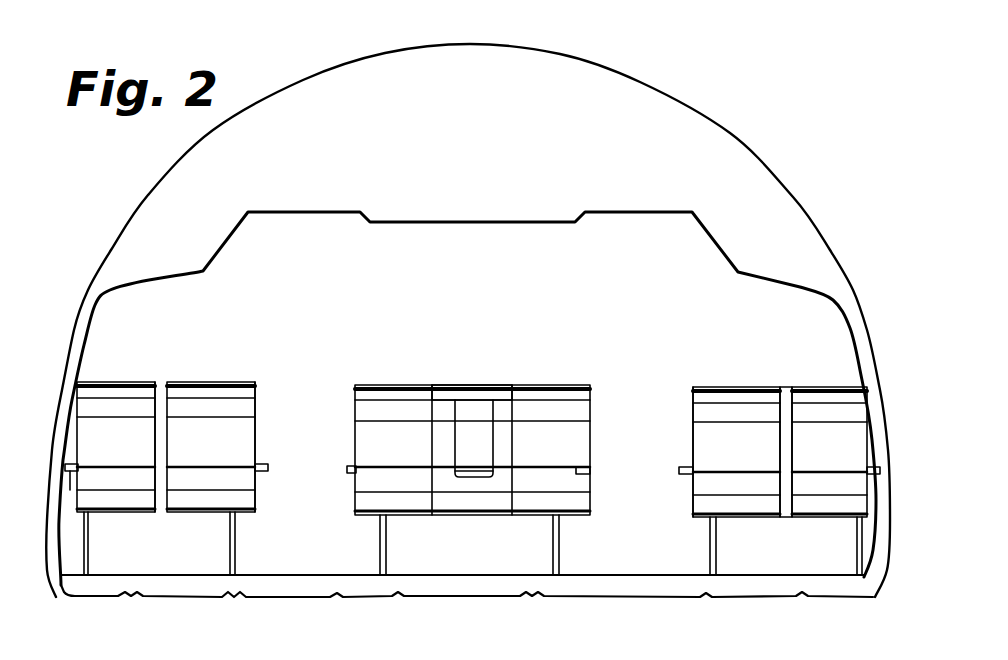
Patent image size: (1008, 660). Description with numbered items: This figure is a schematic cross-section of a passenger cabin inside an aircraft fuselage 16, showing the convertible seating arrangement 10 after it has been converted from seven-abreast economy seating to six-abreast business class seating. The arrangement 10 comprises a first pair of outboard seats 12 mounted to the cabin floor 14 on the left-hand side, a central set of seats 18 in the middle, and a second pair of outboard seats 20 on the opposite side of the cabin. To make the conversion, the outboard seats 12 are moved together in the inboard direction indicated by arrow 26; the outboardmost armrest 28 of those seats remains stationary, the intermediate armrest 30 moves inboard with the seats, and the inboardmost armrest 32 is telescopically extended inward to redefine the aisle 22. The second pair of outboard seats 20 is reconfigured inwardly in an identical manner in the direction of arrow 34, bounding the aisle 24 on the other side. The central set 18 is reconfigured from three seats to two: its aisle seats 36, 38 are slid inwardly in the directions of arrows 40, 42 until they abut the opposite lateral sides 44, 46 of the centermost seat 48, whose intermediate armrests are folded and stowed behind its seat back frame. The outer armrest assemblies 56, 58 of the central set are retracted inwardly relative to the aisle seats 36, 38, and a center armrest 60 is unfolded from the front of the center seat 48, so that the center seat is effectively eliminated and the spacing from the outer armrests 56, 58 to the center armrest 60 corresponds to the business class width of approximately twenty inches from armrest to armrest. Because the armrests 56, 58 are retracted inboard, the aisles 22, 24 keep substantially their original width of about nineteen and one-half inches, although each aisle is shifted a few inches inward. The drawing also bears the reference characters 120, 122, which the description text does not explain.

The convertible seating arrangement 10 is at (697, 323).
The first pair of outboard seats 12 is at (119, 377).
The floor 14 is at (310, 600).
The aircraft fuselage 16 is at (733, 133).
The central set of seats 18 is at (467, 372).
The second pair of outboard seats 20 is at (827, 373).
The aisle 22 is at (318, 438).
The aisle 24 is at (820, 352).
The arrow 26 is at (205, 352).
The outboardmost armrest 28 is at (73, 522).
The intermediate armrest 30 is at (160, 468).
The inboardmost armrest 32 is at (265, 463).
The arrow 34 is at (831, 250).
The aisle seat 36 is at (410, 384).
The aisle seat 38 is at (563, 388).
The arrow 40 is at (425, 352).
The arrow 42 is at (600, 352).
The lateral side 44 is at (477, 443).
The lateral side 46 is at (477, 443).
The centermost seat 48 is at (500, 387).
The outer armrest assembly 56 is at (347, 472).
The outer armrest assembly 58 is at (593, 473).
The center armrest 60 is at (473, 464).
The end wall 120 is at (72, 464).
The end wall 122 is at (238, 388).